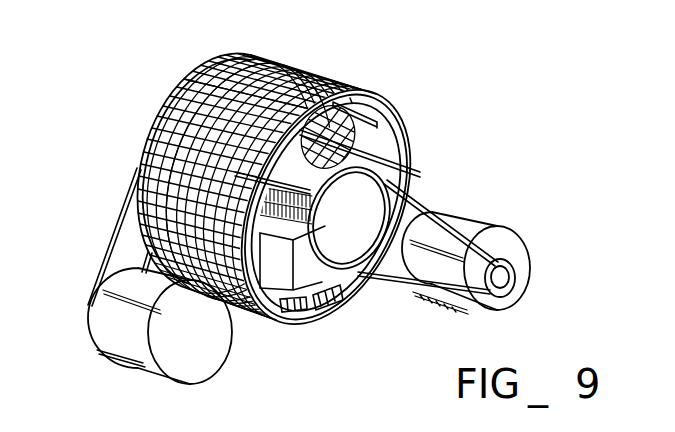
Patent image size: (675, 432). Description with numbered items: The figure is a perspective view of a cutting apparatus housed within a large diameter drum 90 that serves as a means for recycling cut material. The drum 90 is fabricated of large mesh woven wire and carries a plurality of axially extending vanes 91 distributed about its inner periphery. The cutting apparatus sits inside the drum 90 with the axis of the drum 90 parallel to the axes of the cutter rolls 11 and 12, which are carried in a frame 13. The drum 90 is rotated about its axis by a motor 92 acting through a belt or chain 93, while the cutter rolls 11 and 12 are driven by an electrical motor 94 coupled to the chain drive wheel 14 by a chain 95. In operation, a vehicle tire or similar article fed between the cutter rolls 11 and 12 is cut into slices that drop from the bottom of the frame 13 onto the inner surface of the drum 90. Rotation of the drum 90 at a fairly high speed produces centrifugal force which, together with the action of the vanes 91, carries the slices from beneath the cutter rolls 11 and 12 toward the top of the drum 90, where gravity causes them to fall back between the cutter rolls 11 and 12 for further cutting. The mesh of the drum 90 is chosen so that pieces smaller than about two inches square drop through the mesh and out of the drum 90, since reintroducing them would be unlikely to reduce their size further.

The drum 90 is at (297, 80).
The vanes 91 is at (363, 112).
The motor 92 is at (102, 327).
The belt or chain 93 is at (110, 243).
The electrical motor 94 is at (487, 230).
The chain 95 is at (417, 202).
The cutter roll 11 is at (228, 182).
The cutter roll 12 is at (220, 172).
The frame 13 is at (281, 272).
The chain drive wheel 14 is at (367, 192).